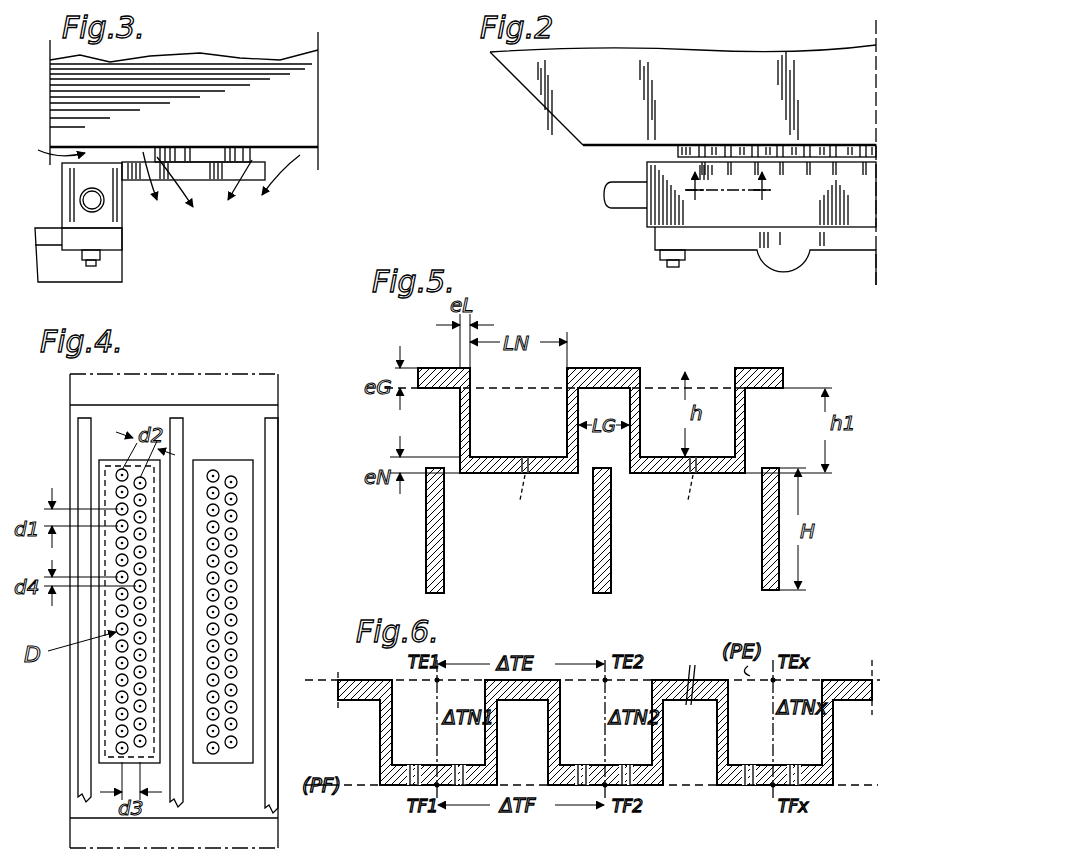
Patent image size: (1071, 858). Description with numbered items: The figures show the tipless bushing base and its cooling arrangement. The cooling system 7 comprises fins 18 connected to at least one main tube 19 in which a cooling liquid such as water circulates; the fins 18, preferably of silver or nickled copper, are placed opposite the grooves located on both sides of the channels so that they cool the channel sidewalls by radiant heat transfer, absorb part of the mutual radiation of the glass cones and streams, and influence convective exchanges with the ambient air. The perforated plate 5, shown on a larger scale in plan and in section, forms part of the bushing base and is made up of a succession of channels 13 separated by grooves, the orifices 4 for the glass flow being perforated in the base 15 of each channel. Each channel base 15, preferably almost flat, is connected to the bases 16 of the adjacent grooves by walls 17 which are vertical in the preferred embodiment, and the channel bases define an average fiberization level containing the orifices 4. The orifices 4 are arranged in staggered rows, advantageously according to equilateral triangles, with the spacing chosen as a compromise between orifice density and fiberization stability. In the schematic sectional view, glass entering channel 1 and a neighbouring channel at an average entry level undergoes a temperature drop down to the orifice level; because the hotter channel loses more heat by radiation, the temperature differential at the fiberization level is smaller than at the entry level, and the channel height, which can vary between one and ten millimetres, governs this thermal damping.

In FIG. 3, the channel 1 is at (304, 98).
In FIG. 2, the channel 1 is at (560, 97).
In FIG. 2, the orifices 4 is at (727, 198).
In FIG. 4, the orifices 4 is at (237, 499).
In FIG. 5, the orifices 4 is at (604, 491).
In FIG. 3, the perforated plate 5 is at (212, 147).
In FIG. 2, the perforated plate 5 is at (680, 152).
In FIG. 4, the perforated plate 5 is at (205, 418).
In FIG. 5, the perforated plate 5 is at (756, 368).
In FIG. 3, the cooling system 7 is at (122, 216).
In FIG. 2, the cooling system 7 is at (655, 215).
In FIG. 3, the channels 13 is at (178, 148).
In FIG. 2, the channels 13 is at (768, 147).
In FIG. 4, the channels 13 is at (112, 460).
In FIG. 5, the channels 13 is at (458, 430).
In FIG. 5, the base of channel 15 is at (490, 475).
In FIG. 5, the bases of grooves 16 is at (424, 398).
In FIG. 5, the walls 17 is at (476, 418).
In FIG. 3, the fins 18 is at (215, 185).
In FIG. 2, the fins 18 is at (832, 176).
In FIG. 4, the fins 18 is at (88, 418).
In FIG. 5, the fins 18 is at (444, 562).
In FIG. 3, the main tube 19 is at (78, 184).
In FIG. 2, the main tube 19 is at (607, 205).